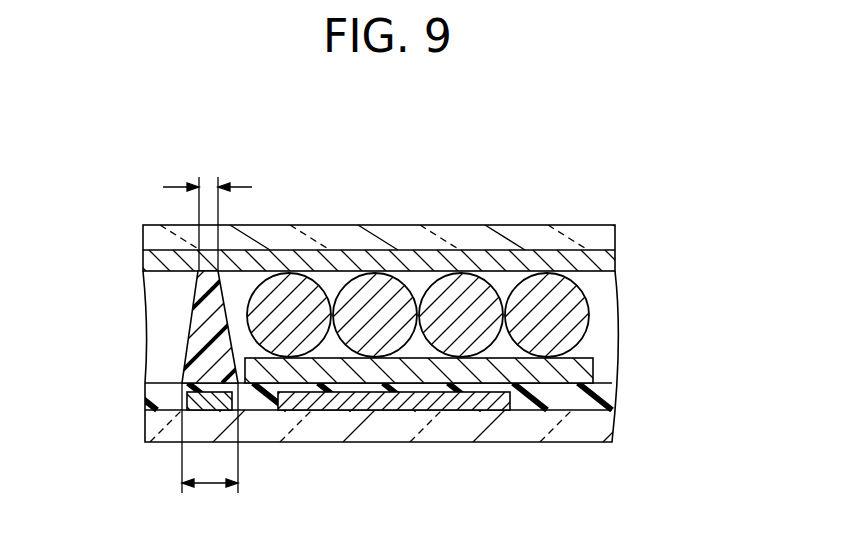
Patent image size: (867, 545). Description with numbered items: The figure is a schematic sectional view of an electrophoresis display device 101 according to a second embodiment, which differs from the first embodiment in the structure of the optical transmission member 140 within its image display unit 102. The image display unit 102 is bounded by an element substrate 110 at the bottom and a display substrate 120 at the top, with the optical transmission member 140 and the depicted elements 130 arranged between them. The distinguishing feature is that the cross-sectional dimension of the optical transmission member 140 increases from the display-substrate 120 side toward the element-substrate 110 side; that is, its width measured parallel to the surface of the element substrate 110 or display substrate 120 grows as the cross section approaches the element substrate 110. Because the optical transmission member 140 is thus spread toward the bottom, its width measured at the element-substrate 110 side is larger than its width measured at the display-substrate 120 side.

The electrophoresis display device 101 is at (118, 116).
The image display unit 102 is at (662, 135).
The element substrate 110 is at (626, 429).
The display substrate 120 is at (614, 220).
The spacer particles 130 is at (585, 313).
The optical transmission member 140 is at (193, 313).